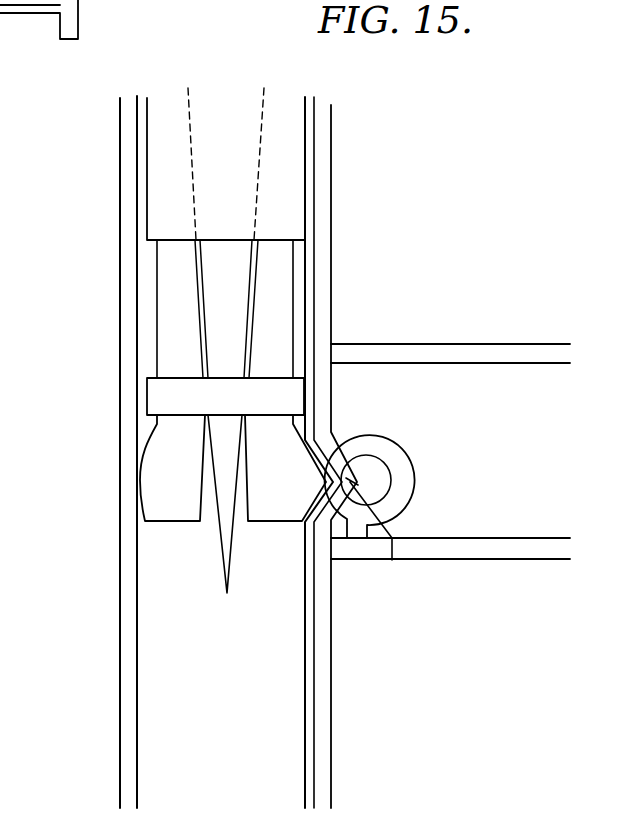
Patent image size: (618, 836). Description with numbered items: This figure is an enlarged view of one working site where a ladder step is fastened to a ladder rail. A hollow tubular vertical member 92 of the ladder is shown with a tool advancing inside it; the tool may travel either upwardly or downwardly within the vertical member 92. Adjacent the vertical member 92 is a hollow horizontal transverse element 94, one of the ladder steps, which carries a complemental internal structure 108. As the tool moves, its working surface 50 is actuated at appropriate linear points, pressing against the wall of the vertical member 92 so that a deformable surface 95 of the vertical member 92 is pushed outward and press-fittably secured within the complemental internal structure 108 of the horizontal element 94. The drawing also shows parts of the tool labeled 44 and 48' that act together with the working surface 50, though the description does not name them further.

The guide tube / upper block 44 is at (220, 183).
The hollow vertical member 92 is at (128, 311).
The gripping jaw 48' is at (155, 416).
The working surface 50 is at (282, 503).
The hollow horizontal transverse element 94 is at (468, 348).
The deformable surface 95 is at (393, 560).
The complemental internal structure 108 is at (395, 473).